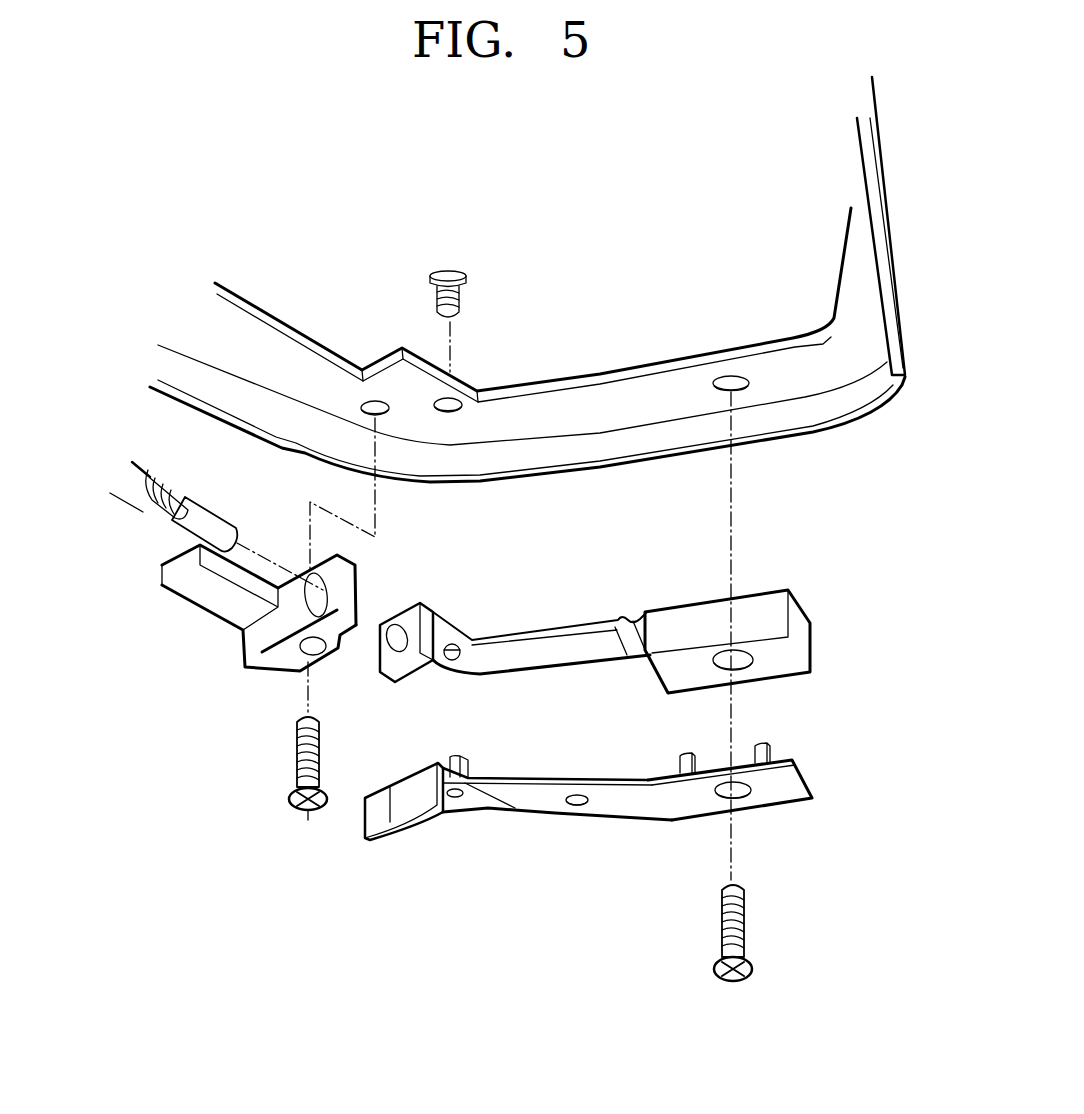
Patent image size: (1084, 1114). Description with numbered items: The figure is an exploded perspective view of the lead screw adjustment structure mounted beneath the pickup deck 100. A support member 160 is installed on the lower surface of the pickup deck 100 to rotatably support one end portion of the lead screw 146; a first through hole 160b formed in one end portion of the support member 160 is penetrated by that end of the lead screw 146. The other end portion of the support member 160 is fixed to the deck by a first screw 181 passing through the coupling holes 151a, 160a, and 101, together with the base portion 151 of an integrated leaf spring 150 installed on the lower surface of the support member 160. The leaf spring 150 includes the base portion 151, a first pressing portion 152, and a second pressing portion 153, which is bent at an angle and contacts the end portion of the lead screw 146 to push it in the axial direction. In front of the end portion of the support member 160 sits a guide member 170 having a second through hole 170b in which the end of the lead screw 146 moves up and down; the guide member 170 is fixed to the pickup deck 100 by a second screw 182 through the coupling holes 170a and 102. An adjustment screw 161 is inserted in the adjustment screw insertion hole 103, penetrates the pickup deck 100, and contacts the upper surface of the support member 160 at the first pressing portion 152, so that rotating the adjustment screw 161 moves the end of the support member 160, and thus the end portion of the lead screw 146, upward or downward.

The pickup deck 100 is at (878, 408).
The coupling hole 101 is at (745, 388).
The coupling hole 102 is at (378, 412).
The adjustment screw insertion hole 103 is at (453, 408).
The lead screw 146 is at (138, 520).
The leaf spring 150 is at (637, 805).
The base portion 151 is at (788, 800).
The coupling hole 151a is at (717, 797).
The first pressing portion 152 is at (488, 810).
The second pressing portion 153 is at (410, 788).
The support member 160 is at (648, 637).
The coupling hole 160a is at (740, 667).
The first through hole 160b is at (403, 635).
The adjustment screw 161 is at (432, 272).
The guide member 170 is at (230, 616).
The coupling hole 170a is at (300, 658).
The second through hole 170b is at (316, 585).
The first screw 181 is at (720, 978).
The second screw 182 is at (307, 812).